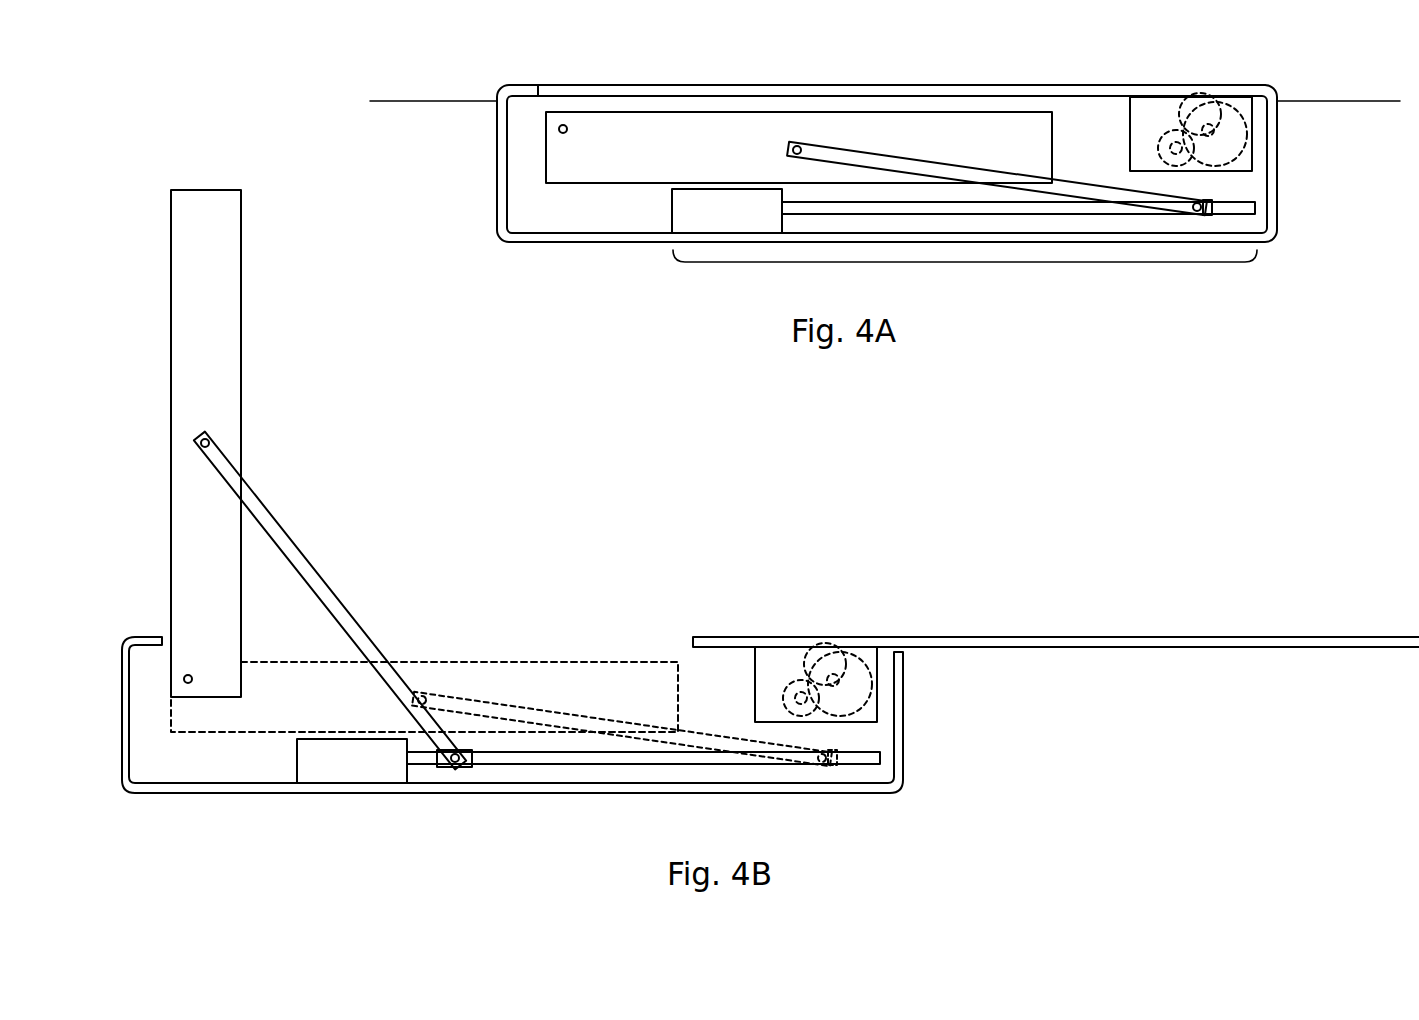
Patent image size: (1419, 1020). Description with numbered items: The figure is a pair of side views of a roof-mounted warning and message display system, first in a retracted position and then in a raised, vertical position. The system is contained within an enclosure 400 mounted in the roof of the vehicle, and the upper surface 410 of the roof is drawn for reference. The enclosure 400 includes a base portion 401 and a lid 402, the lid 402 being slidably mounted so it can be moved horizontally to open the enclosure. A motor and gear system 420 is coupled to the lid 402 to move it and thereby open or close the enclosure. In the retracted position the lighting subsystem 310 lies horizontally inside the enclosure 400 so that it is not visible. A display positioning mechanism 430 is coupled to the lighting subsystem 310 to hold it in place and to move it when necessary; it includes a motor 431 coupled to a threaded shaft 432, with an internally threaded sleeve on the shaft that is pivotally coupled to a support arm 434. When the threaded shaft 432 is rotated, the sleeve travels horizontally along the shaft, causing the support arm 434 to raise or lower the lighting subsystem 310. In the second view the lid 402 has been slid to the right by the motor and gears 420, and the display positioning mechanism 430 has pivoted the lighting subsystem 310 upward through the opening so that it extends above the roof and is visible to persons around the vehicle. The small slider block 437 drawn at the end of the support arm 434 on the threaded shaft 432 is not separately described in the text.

In FIG. 4A, the lighting subsystem 310 is at (732, 112).
In FIG. 4B, the lighting subsystem 310 is at (241, 340).
In FIG. 4A, the enclosure 400 is at (1302, 177).
In FIG. 4A, the base portion 401 is at (1280, 197).
In FIG. 4A, the lid 402 is at (883, 96).
In FIG. 4B, the lid 402 is at (1057, 637).
In FIG. 4A, the upper surface of the roof 410 is at (1312, 101).
In FIG. 4A, the motor and gear system 420 is at (1255, 130).
In FIG. 4B, the motor and gear system 420 is at (877, 688).
In FIG. 4A, the display positioning mechanism 430 is at (965, 274).
In FIG. 4A, the motor 431 is at (672, 215).
In FIG. 4B, the motor 431 is at (352, 761).
In FIG. 4A, the threaded shaft 432 is at (820, 214).
In FIG. 4B, the threaded shaft 432 is at (643, 758).
In FIG. 4A, the support arm 434 is at (1120, 208).
In FIG. 4B, the support arm 434 is at (318, 572).
In FIG. 4A, the slider 437 is at (1208, 215).
In FIG. 4B, the slider 437 is at (637, 758).